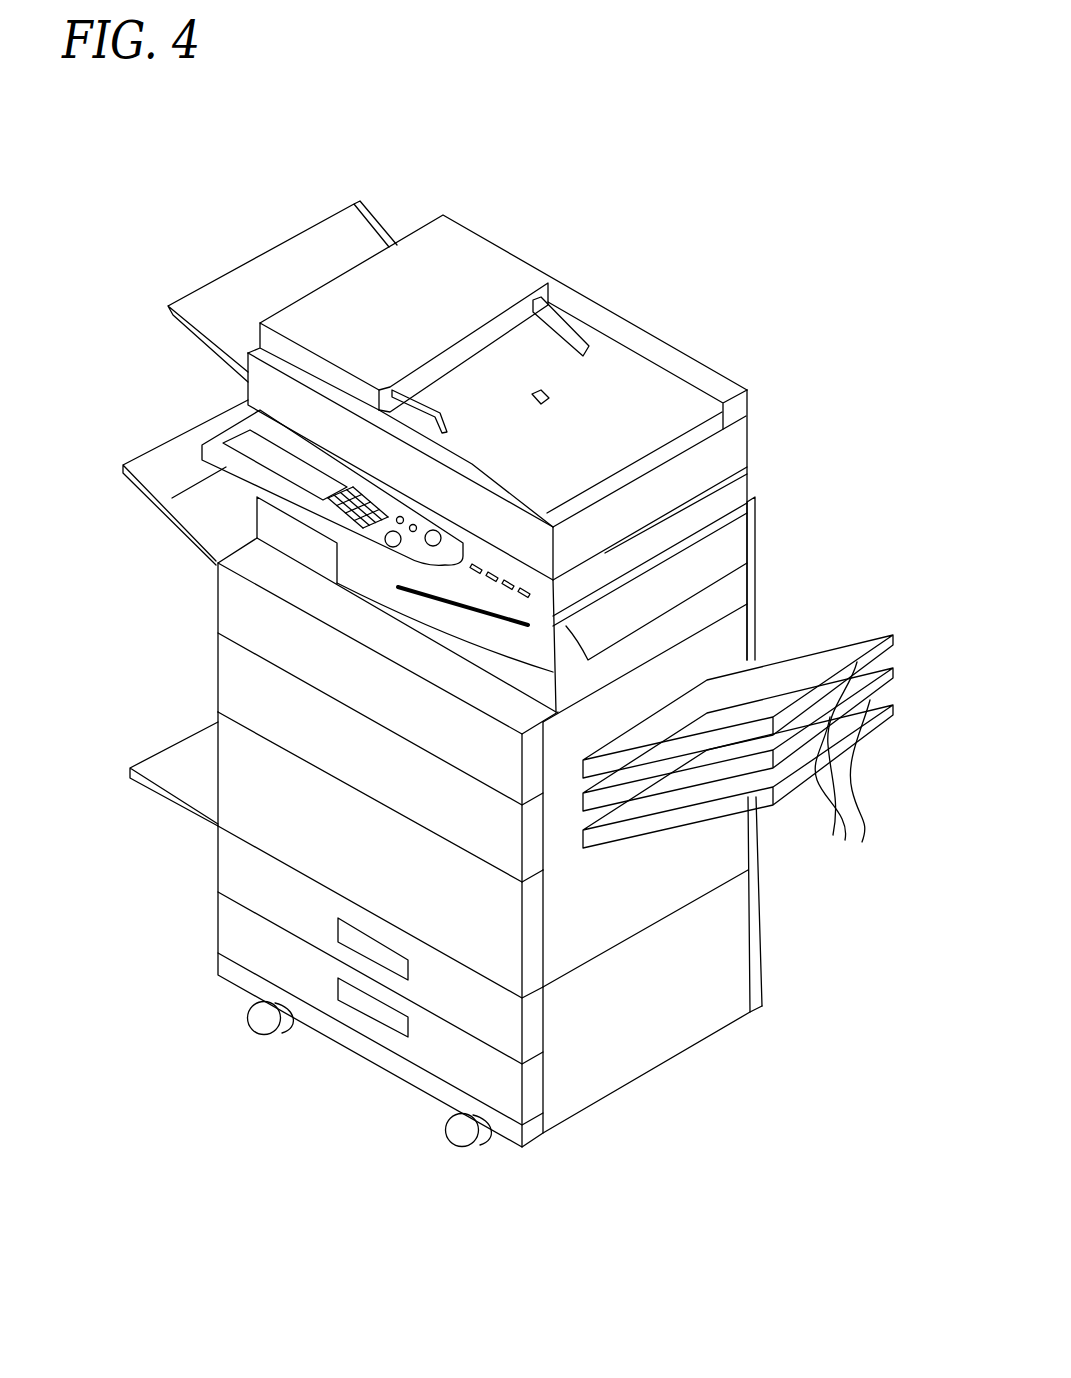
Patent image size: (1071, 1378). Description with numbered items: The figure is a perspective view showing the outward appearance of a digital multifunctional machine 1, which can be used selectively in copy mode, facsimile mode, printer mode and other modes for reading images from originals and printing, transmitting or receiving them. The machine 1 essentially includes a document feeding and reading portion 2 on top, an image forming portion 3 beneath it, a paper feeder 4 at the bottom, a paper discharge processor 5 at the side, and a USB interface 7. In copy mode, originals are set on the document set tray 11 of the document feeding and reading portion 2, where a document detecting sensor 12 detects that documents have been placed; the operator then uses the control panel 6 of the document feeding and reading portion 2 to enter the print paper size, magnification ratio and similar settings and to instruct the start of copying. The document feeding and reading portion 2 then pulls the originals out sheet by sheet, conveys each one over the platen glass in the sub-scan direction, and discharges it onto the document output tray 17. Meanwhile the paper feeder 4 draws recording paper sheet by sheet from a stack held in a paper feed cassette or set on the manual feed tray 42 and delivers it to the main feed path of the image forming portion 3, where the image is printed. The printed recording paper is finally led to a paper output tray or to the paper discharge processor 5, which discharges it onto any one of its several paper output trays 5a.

The digital multifunctional machine 1 is at (770, 121).
The document feeding and reading portion 2 is at (779, 383).
The image forming portion 3 is at (198, 657).
The paper feeder 4 is at (201, 900).
The paper discharge processor 5 is at (818, 621).
The paper output trays 5a is at (842, 770).
The control panel 6 is at (253, 460).
The USB interface 7 is at (487, 572).
The document set tray 11 is at (567, 373).
The document detecting sensor 12 is at (538, 404).
The document output tray 17 is at (388, 213).
The manual feed tray 42 is at (181, 748).